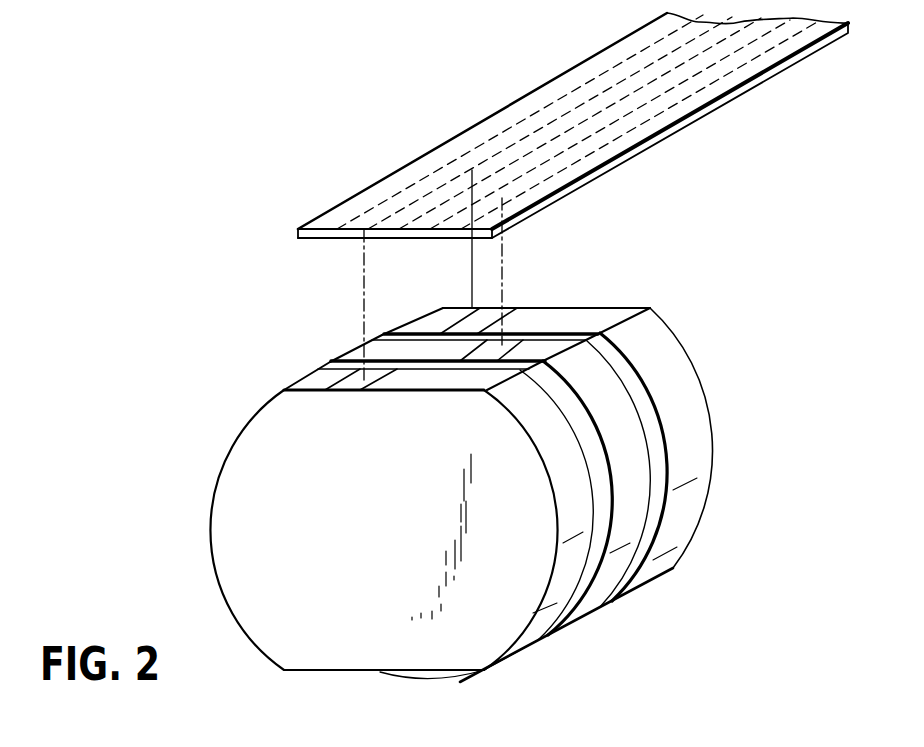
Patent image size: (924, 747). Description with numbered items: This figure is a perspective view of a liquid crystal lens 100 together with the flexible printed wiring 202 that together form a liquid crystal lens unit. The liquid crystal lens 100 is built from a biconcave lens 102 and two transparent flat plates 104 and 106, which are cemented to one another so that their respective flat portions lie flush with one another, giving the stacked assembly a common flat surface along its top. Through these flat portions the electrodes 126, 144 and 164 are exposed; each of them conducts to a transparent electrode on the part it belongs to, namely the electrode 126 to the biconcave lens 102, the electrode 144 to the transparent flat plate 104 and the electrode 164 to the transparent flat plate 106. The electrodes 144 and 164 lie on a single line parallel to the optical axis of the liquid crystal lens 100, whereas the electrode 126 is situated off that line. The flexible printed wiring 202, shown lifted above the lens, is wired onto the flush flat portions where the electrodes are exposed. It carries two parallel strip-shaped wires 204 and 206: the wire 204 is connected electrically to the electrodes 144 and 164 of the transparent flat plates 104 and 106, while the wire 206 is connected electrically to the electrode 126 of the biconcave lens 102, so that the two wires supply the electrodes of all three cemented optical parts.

The liquid crystal lens 100 is at (231, 384).
The biconcave lens 102 is at (585, 610).
The transparent flat plate 104 is at (696, 470).
The transparent flat plate 106 is at (517, 644).
The electrode 126 is at (520, 342).
The electrode 144 is at (485, 316).
The electrode 164 is at (340, 382).
The flexible printed wiring 202 is at (482, 120).
The wire 204 is at (433, 182).
The wire 206 is at (640, 123).